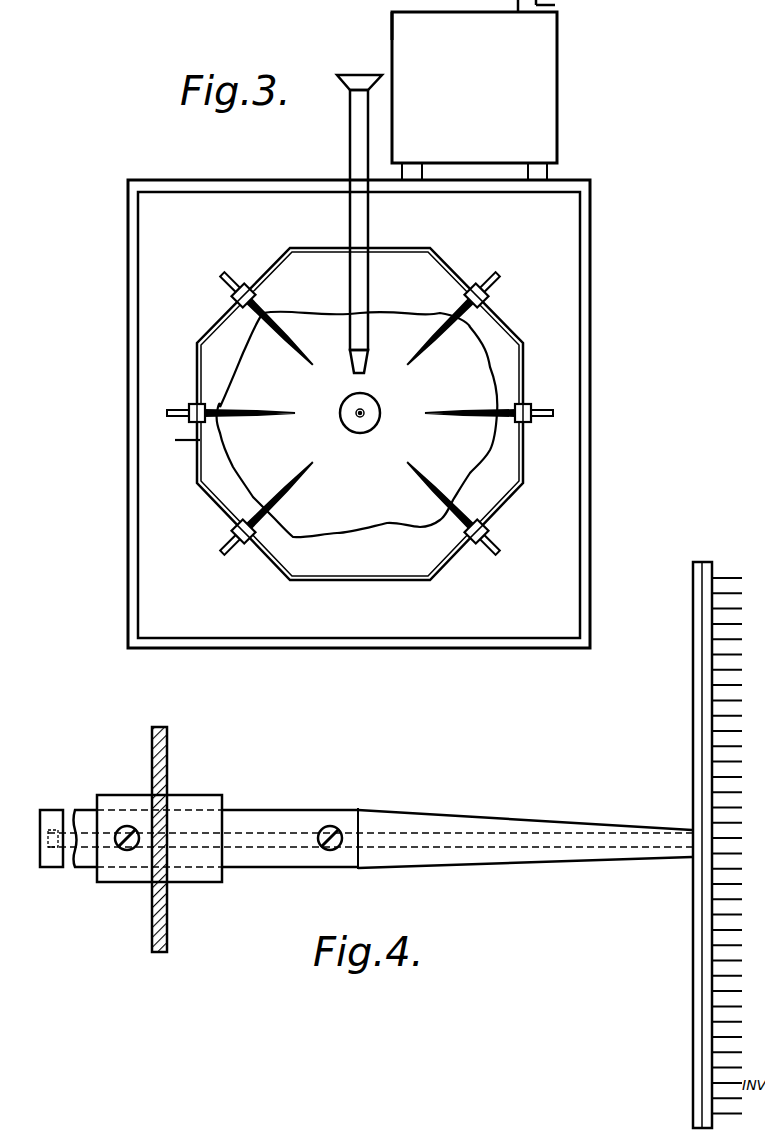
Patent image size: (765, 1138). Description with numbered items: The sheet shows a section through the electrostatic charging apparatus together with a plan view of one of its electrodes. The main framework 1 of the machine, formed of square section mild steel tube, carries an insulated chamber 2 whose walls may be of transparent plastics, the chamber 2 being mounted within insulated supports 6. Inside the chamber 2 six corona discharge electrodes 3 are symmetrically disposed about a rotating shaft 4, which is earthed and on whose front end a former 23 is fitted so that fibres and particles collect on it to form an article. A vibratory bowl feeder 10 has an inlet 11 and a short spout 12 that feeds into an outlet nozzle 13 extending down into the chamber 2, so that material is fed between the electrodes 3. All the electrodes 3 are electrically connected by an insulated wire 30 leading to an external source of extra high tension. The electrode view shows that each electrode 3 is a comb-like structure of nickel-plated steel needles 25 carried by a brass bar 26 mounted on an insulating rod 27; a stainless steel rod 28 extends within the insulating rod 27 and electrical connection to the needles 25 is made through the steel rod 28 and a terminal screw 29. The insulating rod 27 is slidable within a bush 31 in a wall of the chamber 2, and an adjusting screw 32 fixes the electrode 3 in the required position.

In FIG. 3, the main framework 1 is at (128, 492).
In FIG. 3, the insulated chamber 2 is at (215, 507).
In FIG. 4, the insulated chamber 2 is at (152, 752).
In FIG. 3, the corona discharge electrodes 3 is at (265, 410).
In FIG. 4, the corona discharge electrodes 3 is at (366, 841).
In FIG. 3, the rotating shaft 4 is at (356, 411).
In FIG. 3, the insulated supports 6 is at (147, 583).
In FIG. 3, the vibratory bowl feeder 10 is at (480, 108).
In FIG. 3, the inlet 11 is at (555, 5).
In FIG. 3, the short spout 12 is at (392, 12).
In FIG. 3, the outlet nozzle 13 is at (350, 142).
In FIG. 3, the former 23 is at (375, 399).
In FIG. 3, the insulated wire 30 is at (393, 524).
In FIG. 4, the nickel-plated steel needles 25 is at (722, 598).
In FIG. 4, the brass bar 26 is at (693, 976).
In FIG. 4, the insulating rod 27 is at (302, 810).
In FIG. 4, the stainless steel rod 28 is at (437, 833).
In FIG. 4, the terminal screw 29 is at (338, 828).
In FIG. 4, the bush 31 is at (193, 795).
In FIG. 4, the adjusting screw 32 is at (125, 850).